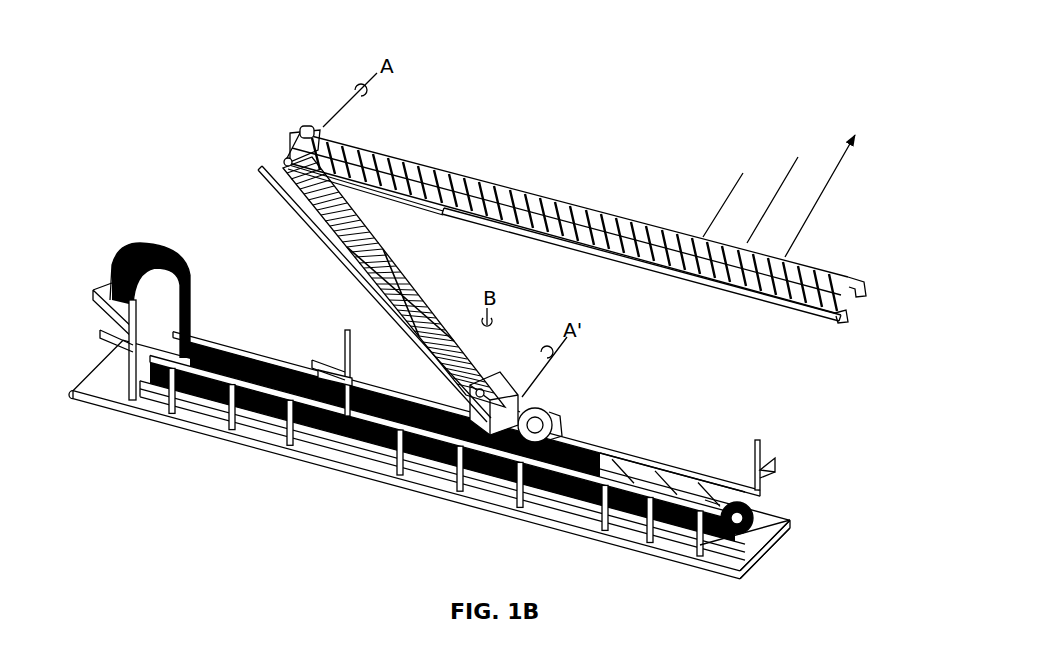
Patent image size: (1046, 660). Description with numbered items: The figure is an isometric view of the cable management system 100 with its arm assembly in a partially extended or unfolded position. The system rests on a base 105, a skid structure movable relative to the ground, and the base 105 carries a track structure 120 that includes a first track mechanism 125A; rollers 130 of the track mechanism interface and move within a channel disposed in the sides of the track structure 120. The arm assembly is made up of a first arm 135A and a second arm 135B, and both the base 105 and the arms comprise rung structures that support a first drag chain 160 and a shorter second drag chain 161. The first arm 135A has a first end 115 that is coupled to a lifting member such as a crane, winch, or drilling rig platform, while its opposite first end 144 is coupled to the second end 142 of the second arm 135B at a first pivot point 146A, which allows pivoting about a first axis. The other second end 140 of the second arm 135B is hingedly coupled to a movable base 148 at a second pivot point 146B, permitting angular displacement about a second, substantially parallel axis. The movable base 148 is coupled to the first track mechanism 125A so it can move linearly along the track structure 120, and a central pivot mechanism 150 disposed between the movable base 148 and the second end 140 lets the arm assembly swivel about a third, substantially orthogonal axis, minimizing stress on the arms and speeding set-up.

The cable management system 100 is at (665, 143).
The base 105 is at (253, 453).
The first end 115 is at (860, 273).
The track structure 120 is at (790, 507).
The first track mechanism 125A is at (767, 480).
The rollers 130 is at (470, 446).
The first arm 135A is at (510, 185).
The second arm 135B is at (410, 263).
The second end 140 is at (503, 368).
The second end 142 is at (282, 200).
The first end 144 is at (310, 125).
The first pivot point 146A is at (290, 140).
The second pivot point 146B is at (513, 371).
The movable base 148 is at (500, 465).
The central pivot mechanism 150 is at (535, 395).
The first drag chain 160 is at (753, 507).
The second drag chain 161 is at (557, 412).